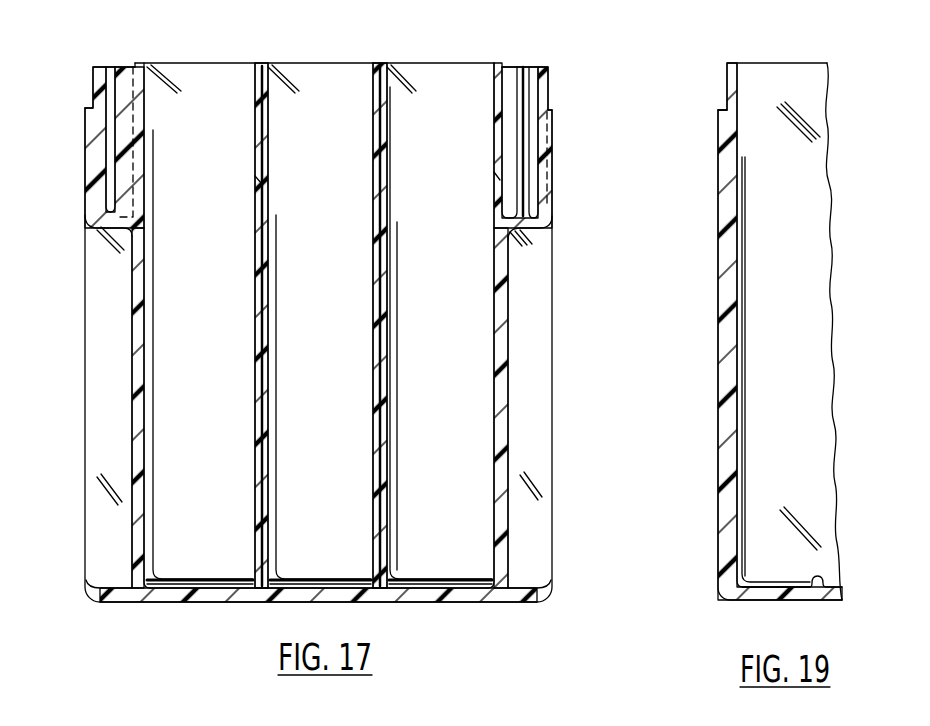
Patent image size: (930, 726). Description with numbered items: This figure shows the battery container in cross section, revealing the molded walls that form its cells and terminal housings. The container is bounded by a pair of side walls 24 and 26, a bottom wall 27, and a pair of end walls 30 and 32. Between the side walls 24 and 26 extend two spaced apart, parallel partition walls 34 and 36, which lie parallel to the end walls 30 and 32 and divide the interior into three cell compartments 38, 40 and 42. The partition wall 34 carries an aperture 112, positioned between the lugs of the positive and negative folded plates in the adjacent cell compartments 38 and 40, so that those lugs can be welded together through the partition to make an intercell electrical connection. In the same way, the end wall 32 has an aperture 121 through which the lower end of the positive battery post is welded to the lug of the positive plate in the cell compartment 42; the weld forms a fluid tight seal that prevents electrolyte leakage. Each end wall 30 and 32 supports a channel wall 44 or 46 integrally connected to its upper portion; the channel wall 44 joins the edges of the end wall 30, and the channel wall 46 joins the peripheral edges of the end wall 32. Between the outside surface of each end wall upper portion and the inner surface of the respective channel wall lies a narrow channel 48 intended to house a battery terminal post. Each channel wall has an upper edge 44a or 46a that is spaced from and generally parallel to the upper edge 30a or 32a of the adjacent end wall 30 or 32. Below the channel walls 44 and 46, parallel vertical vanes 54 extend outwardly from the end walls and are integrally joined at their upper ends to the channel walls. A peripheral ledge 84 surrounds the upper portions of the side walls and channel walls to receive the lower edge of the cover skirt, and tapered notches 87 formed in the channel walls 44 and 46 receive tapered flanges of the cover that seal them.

In FIG. 19, the side wall 24 is at (722, 230).
In FIG. 17, the side wall 26 is at (223, 63).
In FIG. 17, the bottom wall 27 is at (256, 600).
In FIG. 19, the bottom wall 27 is at (778, 602).
In FIG. 17, the end wall 30 is at (146, 78).
In FIG. 17, the upper edge of end wall 30a is at (137, 63).
In FIG. 17, the end wall 32 is at (493, 77).
In FIG. 17, the upper edge of end wall 32a is at (503, 67).
In FIG. 17, the partition wall 34 is at (270, 64).
In FIG. 17, the partition wall 36 is at (374, 72).
In FIG. 19, the partition wall 36 is at (797, 127).
In FIG. 17, the cell compartment 38 is at (212, 141).
In FIG. 17, the cell compartment 40 is at (330, 141).
In FIG. 17, the cell compartment 42 is at (449, 141).
In FIG. 19, the cell compartment 42 is at (802, 252).
In FIG. 17, the channel wall 44 is at (86, 153).
In FIG. 17, the upper edge of channel wall 44a is at (98, 65).
In FIG. 17, the channel wall 46 is at (536, 136).
In FIG. 17, the upper edge of channel wall 46a is at (540, 67).
In FIG. 17, the channel 48 is at (112, 67).
In FIG. 17, the vertical vane 54 is at (85, 310).
In FIG. 17, the peripheral ledge 84 is at (90, 107).
In FIG. 19, the peripheral ledge 84 is at (720, 112).
In FIG. 17, the tapered notch 87 is at (537, 197).
In FIG. 17, the aperture 112 is at (256, 180).
In FIG. 17, the aperture 121 is at (493, 175).